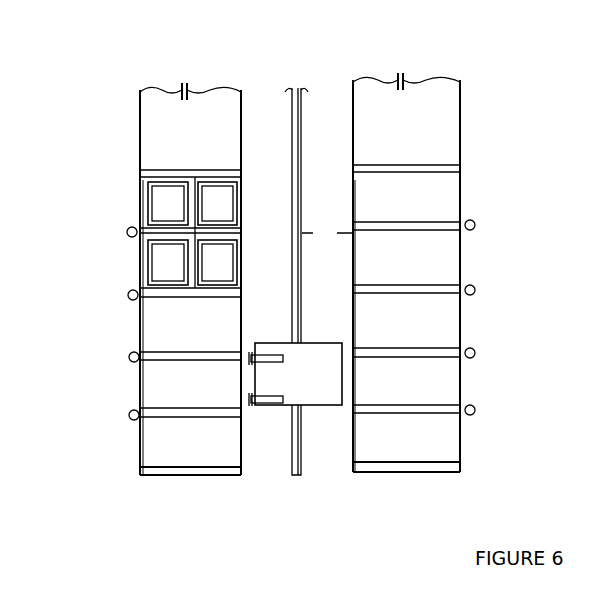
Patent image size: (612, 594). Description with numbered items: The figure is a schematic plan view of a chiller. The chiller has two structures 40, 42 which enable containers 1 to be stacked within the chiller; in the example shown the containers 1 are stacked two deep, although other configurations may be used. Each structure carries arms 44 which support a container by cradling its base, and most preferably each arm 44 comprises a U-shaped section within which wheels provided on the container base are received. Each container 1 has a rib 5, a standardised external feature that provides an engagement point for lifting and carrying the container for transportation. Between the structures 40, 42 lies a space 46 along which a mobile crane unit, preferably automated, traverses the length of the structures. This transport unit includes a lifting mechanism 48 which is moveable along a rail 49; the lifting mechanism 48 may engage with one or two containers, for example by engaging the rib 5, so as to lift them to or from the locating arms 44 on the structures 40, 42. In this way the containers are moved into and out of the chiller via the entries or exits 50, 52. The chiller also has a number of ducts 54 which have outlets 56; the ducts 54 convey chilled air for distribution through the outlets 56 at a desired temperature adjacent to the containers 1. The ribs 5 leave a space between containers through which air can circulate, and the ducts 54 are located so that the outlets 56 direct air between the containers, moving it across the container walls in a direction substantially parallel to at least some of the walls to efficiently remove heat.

The container 1 is at (192, 233).
The rib 5 is at (211, 171).
The structure 40 is at (95, 457).
The structure 42 is at (494, 452).
The arm 44 is at (168, 352).
The space 46 is at (327, 234).
The lifting mechanism 48 is at (250, 405).
The rail 49 is at (292, 137).
The entry or exit 50 is at (270, 463).
The entry or exit 52 is at (319, 102).
The duct 54 is at (127, 232).
The outlet 56 is at (133, 227).